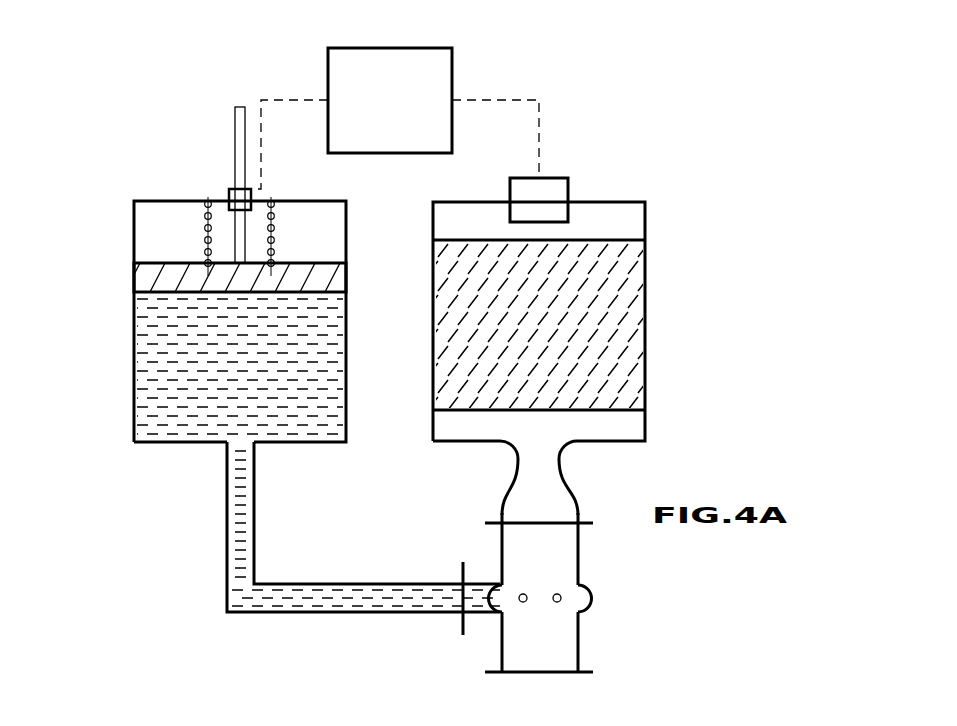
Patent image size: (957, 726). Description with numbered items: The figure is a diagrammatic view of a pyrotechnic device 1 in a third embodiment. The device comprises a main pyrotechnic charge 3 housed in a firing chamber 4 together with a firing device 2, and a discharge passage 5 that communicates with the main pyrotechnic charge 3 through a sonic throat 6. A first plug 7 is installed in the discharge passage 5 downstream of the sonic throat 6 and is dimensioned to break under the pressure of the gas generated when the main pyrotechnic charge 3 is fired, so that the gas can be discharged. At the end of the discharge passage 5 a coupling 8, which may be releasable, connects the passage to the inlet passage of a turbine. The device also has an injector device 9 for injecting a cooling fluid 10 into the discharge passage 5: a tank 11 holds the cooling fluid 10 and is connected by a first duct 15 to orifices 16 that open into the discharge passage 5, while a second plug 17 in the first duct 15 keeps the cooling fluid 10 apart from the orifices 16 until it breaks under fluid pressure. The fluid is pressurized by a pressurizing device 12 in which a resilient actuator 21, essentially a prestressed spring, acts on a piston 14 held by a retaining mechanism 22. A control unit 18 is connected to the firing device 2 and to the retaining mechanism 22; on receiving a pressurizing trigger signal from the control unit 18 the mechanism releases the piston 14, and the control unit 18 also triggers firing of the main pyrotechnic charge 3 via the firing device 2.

The pyrotechnic device 1 is at (626, 63).
The firing device 2 is at (552, 185).
The main pyrotechnic charge 3 is at (615, 330).
The firing chamber 4 is at (627, 426).
The discharge passage 5 is at (560, 640).
The sonic throat 6 is at (562, 455).
The first plug 7 is at (555, 525).
The coupling 8 is at (490, 672).
The injector device 9 is at (197, 539).
The cooling fluid 10 is at (170, 386).
The tank 11 is at (134, 356).
The pressurizing device 12 is at (80, 180).
The piston 14 is at (148, 275).
The first duct 15 is at (341, 583).
The orifices 16 is at (560, 597).
The second plug 17 is at (463, 598).
The control unit 18 is at (400, 113).
The resilient actuator 21 is at (207, 227).
The mechanism for retaining the piston 22 is at (234, 150).